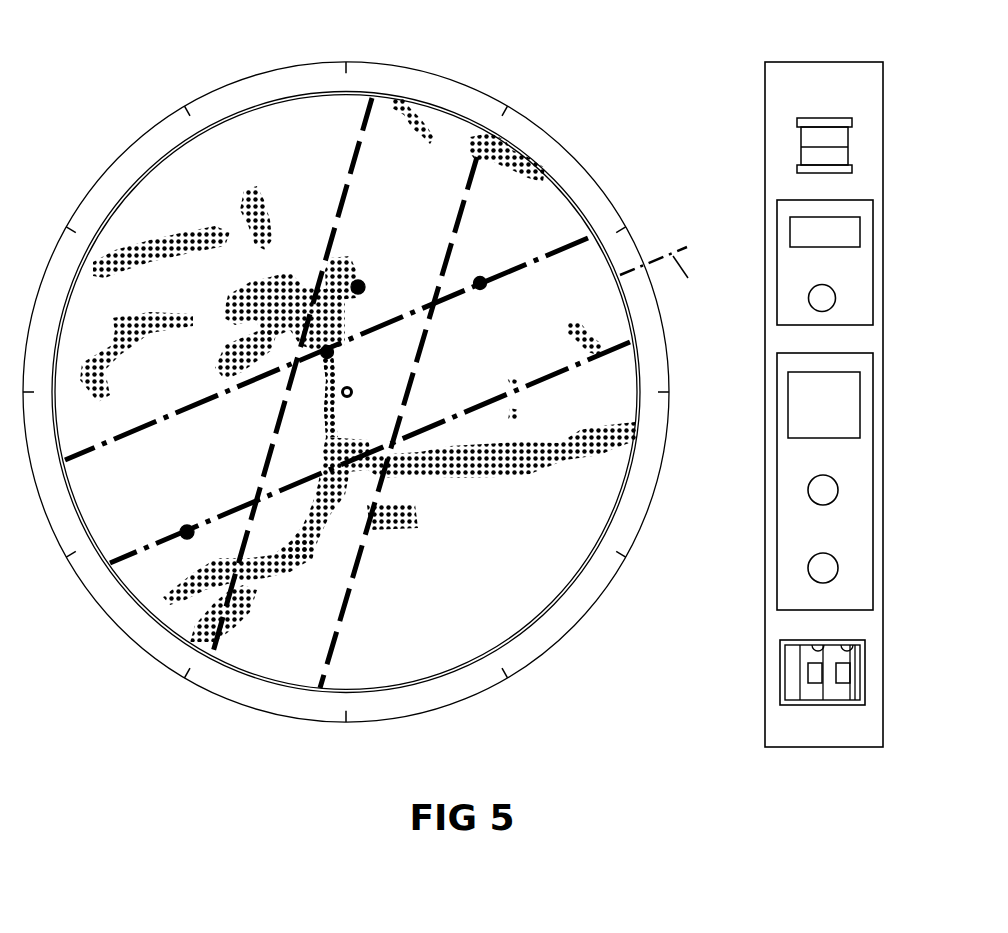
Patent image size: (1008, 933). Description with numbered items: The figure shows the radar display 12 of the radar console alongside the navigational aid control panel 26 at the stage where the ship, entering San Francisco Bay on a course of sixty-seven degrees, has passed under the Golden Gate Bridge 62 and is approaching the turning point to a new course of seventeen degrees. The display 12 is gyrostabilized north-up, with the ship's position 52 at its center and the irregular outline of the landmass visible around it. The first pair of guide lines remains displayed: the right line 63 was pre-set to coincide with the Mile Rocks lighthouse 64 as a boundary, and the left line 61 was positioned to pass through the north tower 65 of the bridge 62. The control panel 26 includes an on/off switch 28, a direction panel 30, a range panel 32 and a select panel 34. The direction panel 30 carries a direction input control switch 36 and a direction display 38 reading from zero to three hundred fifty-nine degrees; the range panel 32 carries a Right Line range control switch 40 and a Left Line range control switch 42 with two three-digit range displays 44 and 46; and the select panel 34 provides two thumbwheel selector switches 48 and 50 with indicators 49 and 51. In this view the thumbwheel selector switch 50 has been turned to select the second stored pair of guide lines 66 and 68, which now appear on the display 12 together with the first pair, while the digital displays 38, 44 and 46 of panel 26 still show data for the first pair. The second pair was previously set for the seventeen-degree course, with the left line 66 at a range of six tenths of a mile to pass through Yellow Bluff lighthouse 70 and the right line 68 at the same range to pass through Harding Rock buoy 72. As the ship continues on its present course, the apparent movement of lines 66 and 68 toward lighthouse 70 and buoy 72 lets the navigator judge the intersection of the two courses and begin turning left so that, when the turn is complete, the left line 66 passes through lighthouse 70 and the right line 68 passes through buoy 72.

The display 12 is at (193, 84).
The control panel 26 is at (777, 73).
The on/off switch 28 is at (800, 137).
The direction panel 30 is at (777, 241).
The range panel 32 is at (777, 478).
The select panel 34 is at (780, 661).
The direction input control switch 36 is at (835, 297).
The direction display 38 is at (857, 229).
The Right Line range control switch 40 is at (836, 488).
The Left Line range control switch 42 is at (836, 567).
The range display 44 is at (853, 389).
The range display 46 is at (855, 426).
The thumbwheel selector switch 48 is at (818, 650).
The indicator 49 is at (812, 676).
The thumbwheel selector switch 50 is at (847, 650).
The indicator 51 is at (840, 676).
The ship's position 52 is at (352, 398).
The left guide line 61 is at (583, 243).
The Golden Gate Bridge 62 is at (331, 418).
The right guide line 63 is at (612, 352).
The Mile Rocks lighthouse 64 is at (183, 528).
The north tower 65 is at (335, 352).
The left guide line 66 is at (367, 112).
The right guide line 68 is at (470, 188).
The Yellow Bluff lighthouse 70 is at (361, 280).
The Harding Rock buoy 72 is at (485, 292).